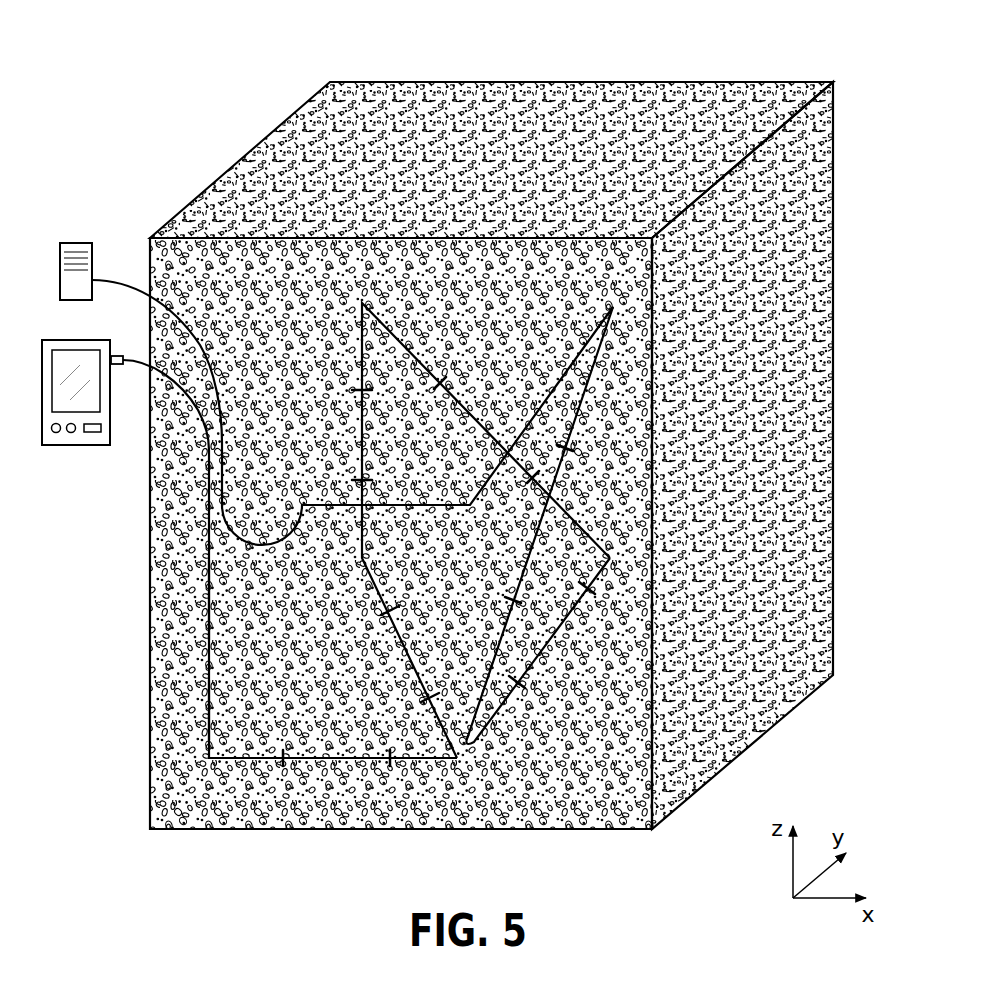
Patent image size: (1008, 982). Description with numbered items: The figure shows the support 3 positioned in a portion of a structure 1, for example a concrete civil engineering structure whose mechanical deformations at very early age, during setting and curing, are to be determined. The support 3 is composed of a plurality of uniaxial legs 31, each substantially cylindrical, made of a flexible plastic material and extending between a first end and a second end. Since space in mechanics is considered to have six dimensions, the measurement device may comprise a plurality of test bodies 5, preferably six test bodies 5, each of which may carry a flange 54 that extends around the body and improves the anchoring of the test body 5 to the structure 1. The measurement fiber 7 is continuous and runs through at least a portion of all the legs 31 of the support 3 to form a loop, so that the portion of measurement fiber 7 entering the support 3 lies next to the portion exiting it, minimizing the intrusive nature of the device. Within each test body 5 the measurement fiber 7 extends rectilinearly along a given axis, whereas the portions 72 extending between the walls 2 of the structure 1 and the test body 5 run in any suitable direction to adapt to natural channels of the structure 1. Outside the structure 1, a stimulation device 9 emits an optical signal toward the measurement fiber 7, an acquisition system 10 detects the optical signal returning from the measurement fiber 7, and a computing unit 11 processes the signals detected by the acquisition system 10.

The structure 1 is at (504, 117).
The walls 2 is at (817, 383).
The support 3 is at (208, 593).
The uniaxial legs 31 is at (208, 700).
The test body 5 is at (350, 417).
The flange 54 is at (282, 755).
The measurement fiber 7 is at (207, 442).
The portions of the measurement fiber 72 is at (188, 395).
The stimulation device 9 is at (70, 243).
The acquisition system 10 is at (118, 356).
The computing unit 11 is at (63, 447).